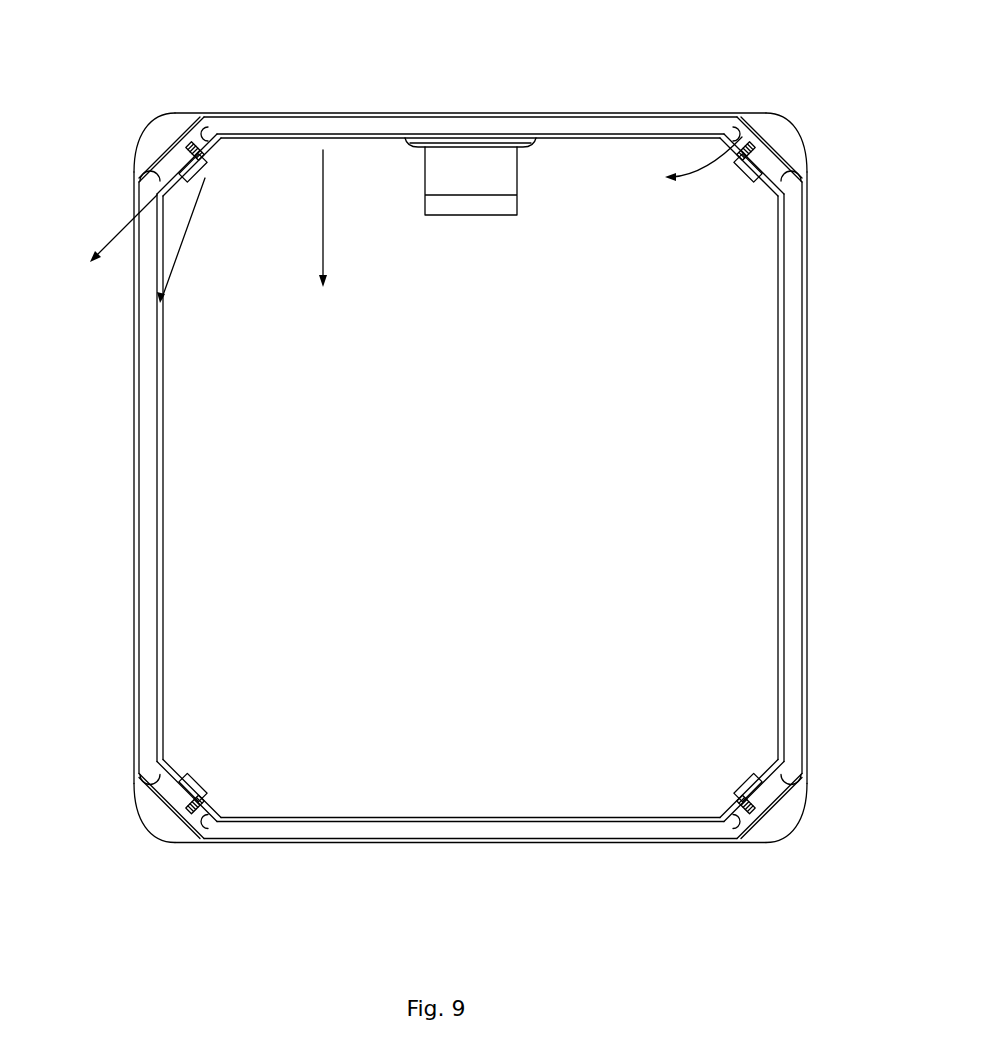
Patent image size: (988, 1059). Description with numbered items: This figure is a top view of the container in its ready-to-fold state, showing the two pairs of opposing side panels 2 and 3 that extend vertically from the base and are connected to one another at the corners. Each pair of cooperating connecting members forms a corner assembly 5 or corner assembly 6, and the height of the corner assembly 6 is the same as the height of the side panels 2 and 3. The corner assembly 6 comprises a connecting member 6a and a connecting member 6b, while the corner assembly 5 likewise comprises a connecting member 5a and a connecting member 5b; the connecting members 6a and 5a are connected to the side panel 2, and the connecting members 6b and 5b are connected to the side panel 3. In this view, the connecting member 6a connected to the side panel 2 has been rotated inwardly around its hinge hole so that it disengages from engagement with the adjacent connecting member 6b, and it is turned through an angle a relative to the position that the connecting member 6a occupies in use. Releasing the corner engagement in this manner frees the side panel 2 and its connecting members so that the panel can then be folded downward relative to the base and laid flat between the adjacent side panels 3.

The side panel 2 is at (462, 128).
The side panel 3 is at (150, 525).
The corner assembly 5 is at (778, 128).
The connecting member 5a is at (742, 137).
The connecting member 5b is at (777, 168).
The corner assembly 6 is at (158, 145).
The connecting member 6a is at (195, 148).
The connecting member 6b is at (175, 163).
The angle α a is at (158, 302).